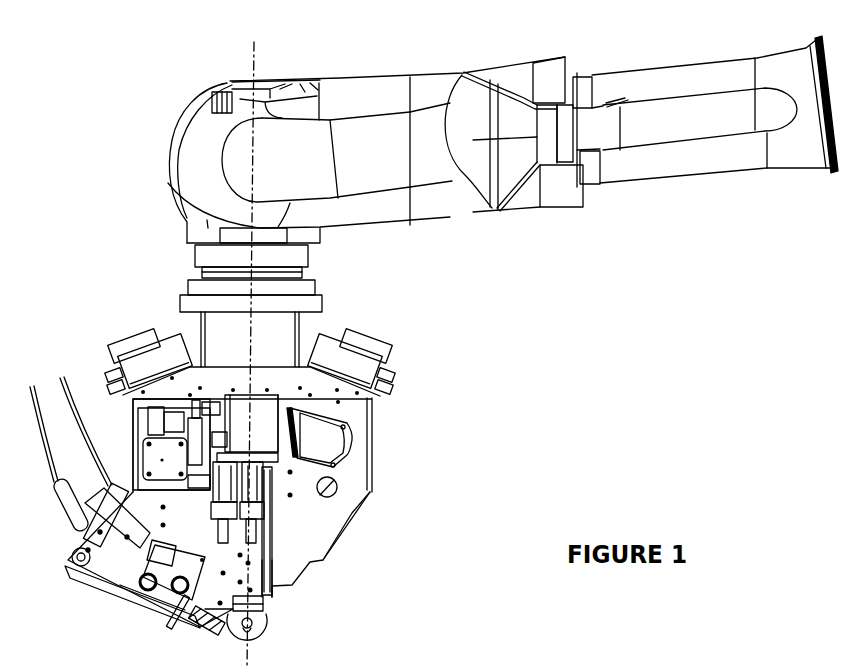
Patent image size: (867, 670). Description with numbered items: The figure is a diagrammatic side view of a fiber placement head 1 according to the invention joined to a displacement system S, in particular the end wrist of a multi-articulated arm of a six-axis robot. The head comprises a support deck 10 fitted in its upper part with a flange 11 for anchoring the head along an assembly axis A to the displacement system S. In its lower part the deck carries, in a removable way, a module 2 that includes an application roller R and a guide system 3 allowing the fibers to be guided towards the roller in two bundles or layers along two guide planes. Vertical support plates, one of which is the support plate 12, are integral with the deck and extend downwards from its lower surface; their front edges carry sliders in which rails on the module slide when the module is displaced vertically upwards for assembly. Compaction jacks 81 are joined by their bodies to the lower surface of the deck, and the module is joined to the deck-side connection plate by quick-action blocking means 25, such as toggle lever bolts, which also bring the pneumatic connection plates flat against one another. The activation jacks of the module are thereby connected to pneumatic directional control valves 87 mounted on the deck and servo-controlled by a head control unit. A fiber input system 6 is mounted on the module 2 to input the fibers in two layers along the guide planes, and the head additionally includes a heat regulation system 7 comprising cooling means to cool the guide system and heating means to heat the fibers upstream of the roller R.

The fiber placement head 1 is at (380, 444).
The module 2 is at (250, 574).
The guide system 3 is at (202, 632).
The fiber input system 6 is at (78, 527).
The heat regulation system 7 is at (128, 608).
The support deck 10 is at (197, 366).
The flange 11 is at (310, 302).
The vertical support plate 12 is at (323, 535).
The quick-action blocking means 25 is at (260, 483).
The compaction jacks 81 is at (278, 405).
The pneumatic directional control valves 87 is at (372, 347).
The assembly axis A is at (254, 344).
The displacement system S is at (442, 76).
The application roller R is at (266, 628).